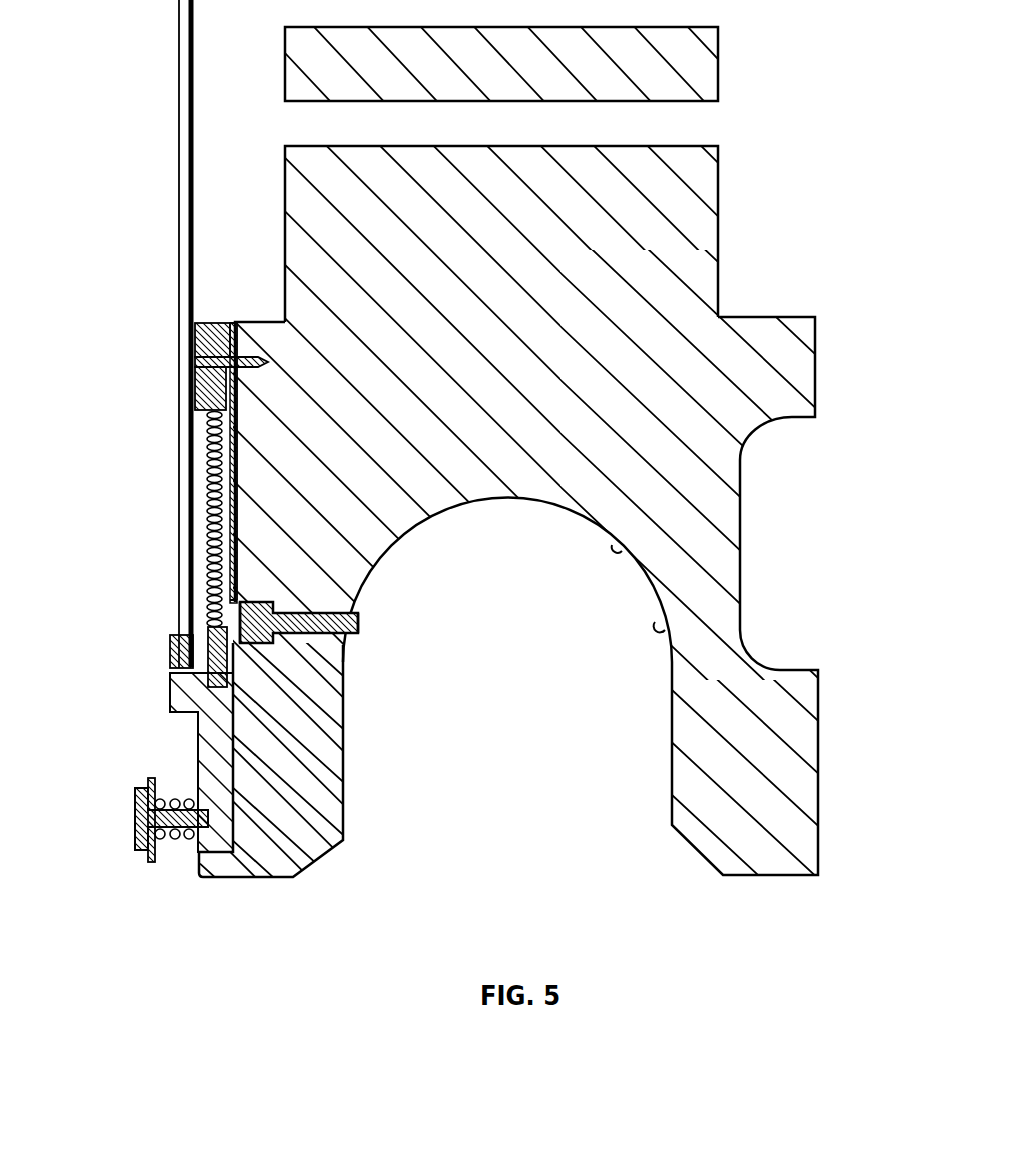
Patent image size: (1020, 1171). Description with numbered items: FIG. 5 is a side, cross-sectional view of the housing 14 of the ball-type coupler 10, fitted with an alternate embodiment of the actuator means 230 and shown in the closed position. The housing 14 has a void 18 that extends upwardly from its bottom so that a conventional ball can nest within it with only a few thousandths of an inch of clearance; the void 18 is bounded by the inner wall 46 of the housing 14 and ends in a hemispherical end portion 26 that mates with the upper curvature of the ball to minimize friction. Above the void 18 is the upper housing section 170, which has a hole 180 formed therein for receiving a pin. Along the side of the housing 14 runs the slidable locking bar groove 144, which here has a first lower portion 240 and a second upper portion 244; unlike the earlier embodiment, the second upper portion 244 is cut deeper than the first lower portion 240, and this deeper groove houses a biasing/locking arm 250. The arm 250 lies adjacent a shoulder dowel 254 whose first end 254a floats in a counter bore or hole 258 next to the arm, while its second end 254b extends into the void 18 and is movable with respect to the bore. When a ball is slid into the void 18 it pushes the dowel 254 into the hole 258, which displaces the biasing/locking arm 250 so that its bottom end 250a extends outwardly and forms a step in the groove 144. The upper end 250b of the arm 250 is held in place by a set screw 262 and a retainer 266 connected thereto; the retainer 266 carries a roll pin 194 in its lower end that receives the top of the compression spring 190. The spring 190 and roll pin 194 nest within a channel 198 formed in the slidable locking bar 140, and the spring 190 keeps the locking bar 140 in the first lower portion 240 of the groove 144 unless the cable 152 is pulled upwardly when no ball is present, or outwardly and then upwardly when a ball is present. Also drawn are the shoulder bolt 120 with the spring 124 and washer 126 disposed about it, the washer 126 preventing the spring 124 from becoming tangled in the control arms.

The ball-type coupler 10 is at (849, 143).
The housing 14 is at (790, 365).
The void 18 is at (516, 677).
The hemispherical end portion 26 is at (625, 552).
The inner wall 46 is at (665, 635).
The shoulder bolt 120 is at (135, 815).
The spring 124 is at (175, 838).
The washer 126 is at (150, 778).
The slidable locking bar 140 is at (172, 649).
The slidable locking bar groove 144 is at (203, 852).
The cable 152 is at (178, 116).
The upper housing section 170 is at (690, 215).
The hole 180 is at (718, 101).
The compression spring 190 is at (212, 501).
The roll pin 194 is at (200, 391).
The channel 198 is at (208, 680).
The actuator means 230 is at (120, 460).
The first lower portion 240 is at (237, 777).
The second upper portion 244 is at (240, 462).
The biasing/locking arm 250 is at (243, 518).
The bottom end 250a is at (236, 620).
The upper end 250b is at (233, 322).
The shoulder dowel 254 is at (360, 629).
The pin head 254a is at (238, 605).
The second end 254b is at (358, 615).
The counter bore or hole 258 is at (327, 637).
The set screw 262 is at (200, 363).
The retainer 266 is at (200, 338).